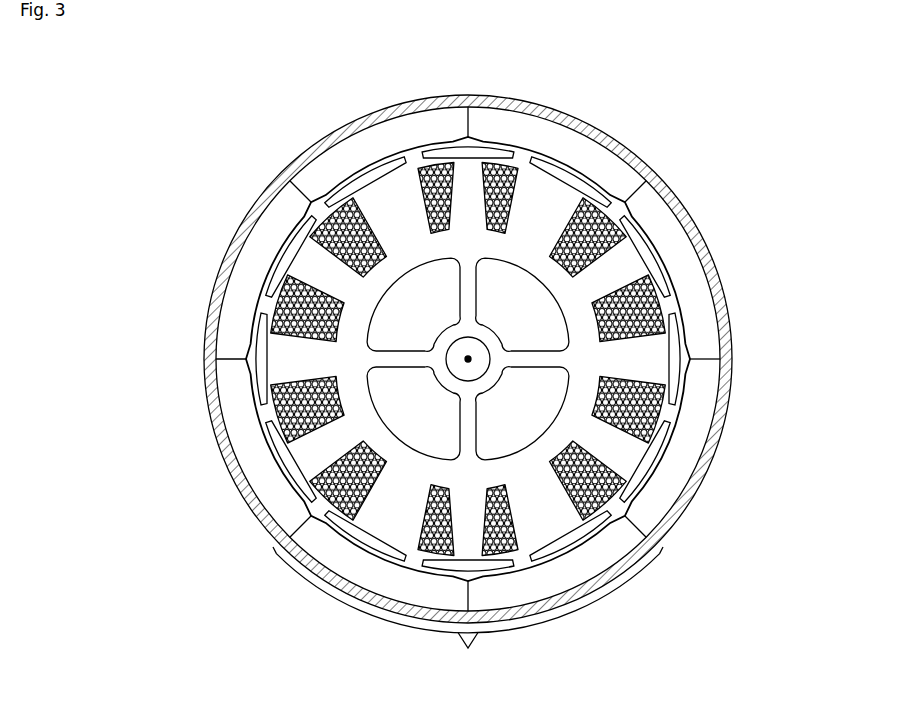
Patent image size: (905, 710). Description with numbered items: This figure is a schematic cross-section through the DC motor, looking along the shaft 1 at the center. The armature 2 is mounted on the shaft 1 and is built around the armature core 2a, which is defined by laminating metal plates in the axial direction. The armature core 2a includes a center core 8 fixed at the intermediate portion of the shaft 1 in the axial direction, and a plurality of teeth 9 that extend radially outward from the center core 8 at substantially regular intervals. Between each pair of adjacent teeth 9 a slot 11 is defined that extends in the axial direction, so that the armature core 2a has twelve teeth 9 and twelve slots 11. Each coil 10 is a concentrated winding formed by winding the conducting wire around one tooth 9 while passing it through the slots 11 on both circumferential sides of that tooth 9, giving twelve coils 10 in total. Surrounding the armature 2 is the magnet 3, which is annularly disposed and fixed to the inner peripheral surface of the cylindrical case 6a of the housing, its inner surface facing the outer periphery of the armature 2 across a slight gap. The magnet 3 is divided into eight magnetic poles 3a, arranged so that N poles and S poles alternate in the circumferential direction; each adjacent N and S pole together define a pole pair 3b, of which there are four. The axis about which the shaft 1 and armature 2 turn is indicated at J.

The shaft 1 is at (457, 373).
The armature 2 is at (512, 178).
The armature core 2a is at (392, 279).
The magnet 3 is at (705, 380).
The magnetic pole 3a is at (248, 302).
The pole pair 3b is at (468, 617).
The case 6a is at (722, 290).
The center core 8 is at (471, 292).
The tooth 9 is at (672, 347).
The coil 10 is at (630, 484).
The slot 11 is at (656, 410).
The rotation axis J is at (472, 364).